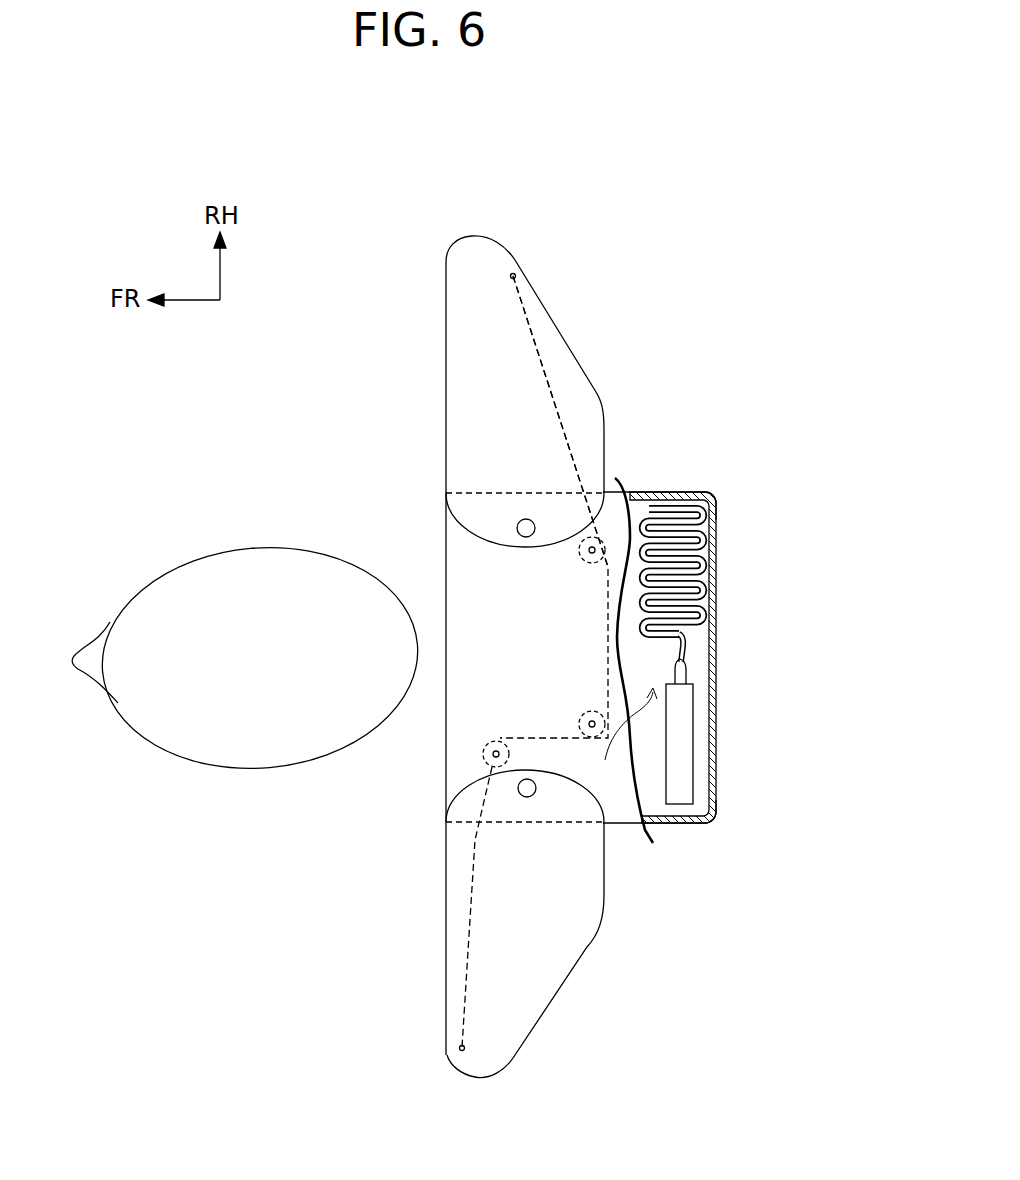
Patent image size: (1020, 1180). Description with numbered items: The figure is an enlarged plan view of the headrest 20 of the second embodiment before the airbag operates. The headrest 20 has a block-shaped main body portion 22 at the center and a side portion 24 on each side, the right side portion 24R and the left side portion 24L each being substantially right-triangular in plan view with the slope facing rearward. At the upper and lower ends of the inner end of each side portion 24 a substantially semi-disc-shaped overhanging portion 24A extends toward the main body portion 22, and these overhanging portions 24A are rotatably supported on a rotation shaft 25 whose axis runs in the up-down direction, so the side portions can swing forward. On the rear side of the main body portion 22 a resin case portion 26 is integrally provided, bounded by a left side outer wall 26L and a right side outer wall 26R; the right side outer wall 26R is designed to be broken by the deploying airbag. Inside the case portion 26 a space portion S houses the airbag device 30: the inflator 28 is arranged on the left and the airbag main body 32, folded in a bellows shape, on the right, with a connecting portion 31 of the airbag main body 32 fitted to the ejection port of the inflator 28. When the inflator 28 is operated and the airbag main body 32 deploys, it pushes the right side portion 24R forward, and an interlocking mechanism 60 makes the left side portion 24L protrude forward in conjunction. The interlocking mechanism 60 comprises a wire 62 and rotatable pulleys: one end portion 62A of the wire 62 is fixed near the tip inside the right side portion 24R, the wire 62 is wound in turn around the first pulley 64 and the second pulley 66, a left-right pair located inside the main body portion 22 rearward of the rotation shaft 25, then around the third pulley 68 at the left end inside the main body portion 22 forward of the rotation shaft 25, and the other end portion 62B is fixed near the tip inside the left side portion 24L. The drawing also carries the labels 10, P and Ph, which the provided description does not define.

The vehicle seat airbag device 10 is at (638, 260).
The headrest 20 is at (426, 391).
The main body portion 22 is at (498, 658).
The side portion 24 is at (485, 671).
The right side portion 24R is at (453, 243).
The left side portion 24L is at (470, 1075).
The overhanging portion 24A is at (450, 522).
The rotation shaft 25 is at (524, 518).
The case portion 26 is at (713, 669).
The right side outer wall 26R is at (666, 492).
The left side outer wall 26L is at (682, 826).
The inflator 28 is at (694, 748).
The airbag device 30 is at (696, 658).
The connecting portion 31 is at (688, 673).
The airbag main body 32 is at (702, 572).
The interlocking mechanism 60 is at (508, 736).
The wire 62 is at (548, 368).
The one end portion of the wire 62A is at (516, 274).
The another end portion of the wire 62B is at (460, 1048).
The first pulley 64 is at (585, 540).
The second pulley 66 is at (586, 712).
The third pulley 68 is at (496, 768).
The occupant P is at (231, 549).
The occupant head Ph is at (222, 736).
The space portion S is at (614, 792).